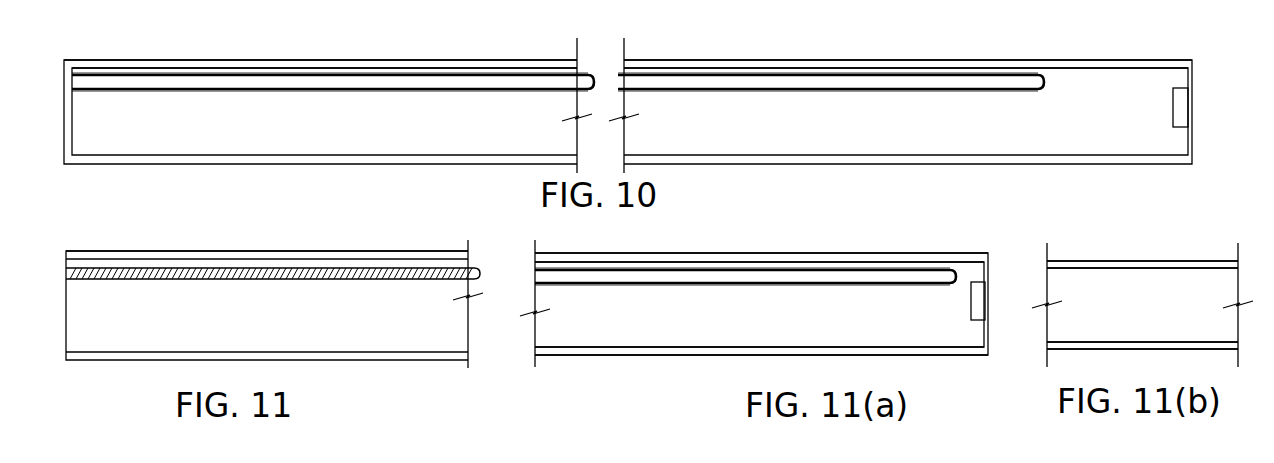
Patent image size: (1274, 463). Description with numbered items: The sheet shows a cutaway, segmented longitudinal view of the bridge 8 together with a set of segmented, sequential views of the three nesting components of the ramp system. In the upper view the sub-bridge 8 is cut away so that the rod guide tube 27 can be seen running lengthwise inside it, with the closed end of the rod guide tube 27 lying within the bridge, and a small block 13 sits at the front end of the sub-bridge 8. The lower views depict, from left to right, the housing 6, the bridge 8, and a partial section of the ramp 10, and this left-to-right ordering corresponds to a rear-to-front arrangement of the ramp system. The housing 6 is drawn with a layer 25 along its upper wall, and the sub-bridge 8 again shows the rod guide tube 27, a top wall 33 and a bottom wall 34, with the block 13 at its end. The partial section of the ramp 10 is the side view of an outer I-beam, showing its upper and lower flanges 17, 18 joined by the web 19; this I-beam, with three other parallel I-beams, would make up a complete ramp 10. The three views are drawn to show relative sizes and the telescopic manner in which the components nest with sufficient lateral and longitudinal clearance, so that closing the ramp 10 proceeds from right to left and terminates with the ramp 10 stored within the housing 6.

In FIG. 11, the housing 6 is at (349, 244).
In FIG. 10, the bridge 8 is at (440, 48).
The bridge 8 is at (765, 237).
The ramp 10 is at (1118, 251).
In FIG. 10, the end cap 13 is at (1173, 107).
The end cap 13 is at (971, 300).
The flange 17 is at (1137, 261).
The flange 18 is at (1093, 349).
The web 19 is at (1188, 285).
In FIG. 11, the adhesive layer 25 is at (129, 272).
In FIG. 10, the rod guide tube 27 is at (88, 80).
The rod guide tube 27 is at (655, 285).
In FIG. 10, the textured, non-slip coating 33 is at (215, 60).
The textured, non-slip coating 33 is at (920, 253).
The lower sheet 34 is at (652, 356).